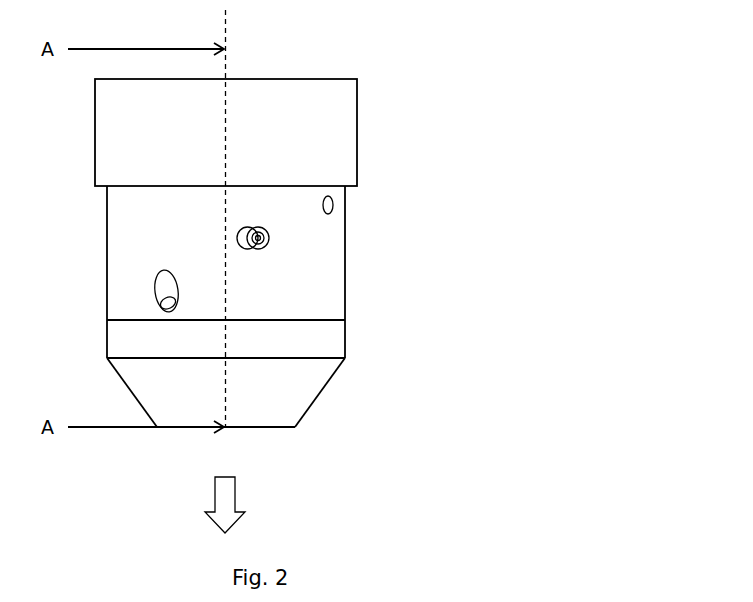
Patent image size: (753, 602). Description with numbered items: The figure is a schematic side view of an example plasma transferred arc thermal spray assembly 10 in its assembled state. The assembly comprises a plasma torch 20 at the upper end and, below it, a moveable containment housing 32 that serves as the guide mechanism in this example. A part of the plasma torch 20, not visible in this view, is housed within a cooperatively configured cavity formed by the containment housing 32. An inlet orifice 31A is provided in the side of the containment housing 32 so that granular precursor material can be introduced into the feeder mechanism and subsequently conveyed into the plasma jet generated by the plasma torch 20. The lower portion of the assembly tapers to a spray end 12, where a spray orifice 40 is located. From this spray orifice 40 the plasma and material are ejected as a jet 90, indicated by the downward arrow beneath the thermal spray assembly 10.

The thermal spray assembly 10 is at (378, 75).
The plasma torch 20 is at (354, 131).
The inlet orifice 31A is at (270, 238).
The containment housing 32 is at (312, 297).
The spray end 12 is at (316, 420).
The spray orifice 40 is at (288, 452).
The jet 90 is at (243, 505).